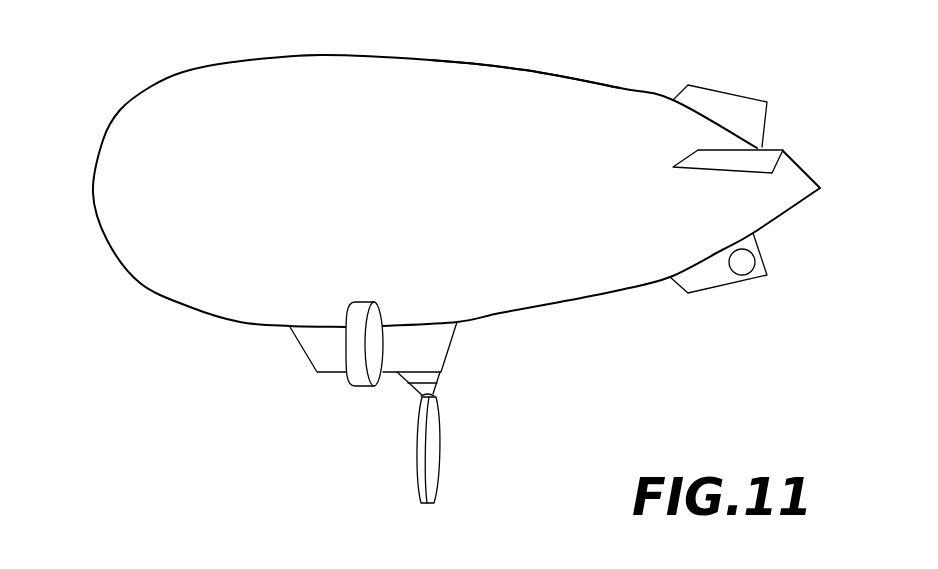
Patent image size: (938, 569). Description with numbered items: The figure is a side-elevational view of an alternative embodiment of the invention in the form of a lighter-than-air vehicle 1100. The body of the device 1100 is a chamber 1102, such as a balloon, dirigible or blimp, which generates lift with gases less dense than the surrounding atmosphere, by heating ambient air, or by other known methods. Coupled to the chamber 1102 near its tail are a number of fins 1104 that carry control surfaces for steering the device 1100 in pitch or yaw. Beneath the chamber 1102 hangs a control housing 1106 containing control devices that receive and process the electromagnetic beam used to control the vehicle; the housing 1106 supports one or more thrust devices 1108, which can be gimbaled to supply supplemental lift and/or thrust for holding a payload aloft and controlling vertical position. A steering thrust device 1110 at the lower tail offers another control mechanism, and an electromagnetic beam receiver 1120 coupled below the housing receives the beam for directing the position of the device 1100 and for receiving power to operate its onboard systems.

The lighter-than-air vehicle 1100 is at (133, 82).
The chamber 1102 is at (525, 70).
The fins 1104 is at (743, 115).
The control housing 1106 is at (325, 348).
The thrust devices 1108 is at (357, 377).
The steering thrust device 1110 is at (737, 257).
The electromagnetic beam receiver 1120 is at (440, 448).